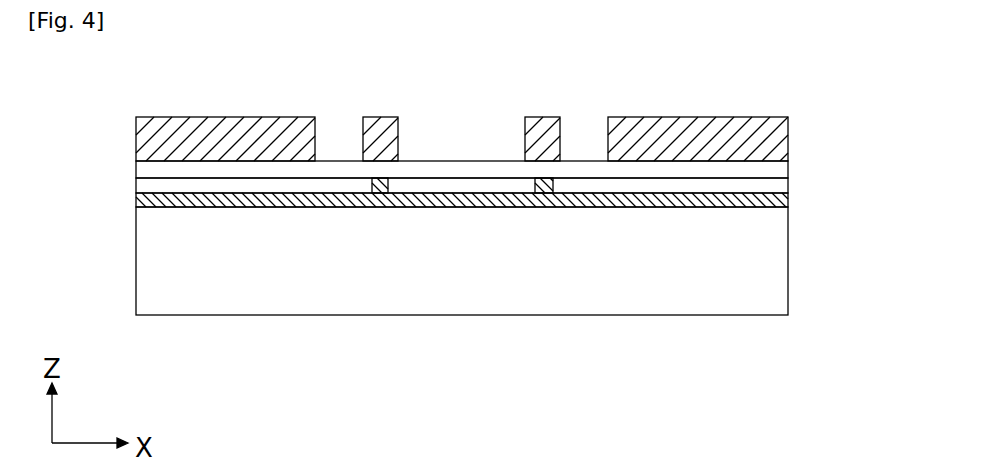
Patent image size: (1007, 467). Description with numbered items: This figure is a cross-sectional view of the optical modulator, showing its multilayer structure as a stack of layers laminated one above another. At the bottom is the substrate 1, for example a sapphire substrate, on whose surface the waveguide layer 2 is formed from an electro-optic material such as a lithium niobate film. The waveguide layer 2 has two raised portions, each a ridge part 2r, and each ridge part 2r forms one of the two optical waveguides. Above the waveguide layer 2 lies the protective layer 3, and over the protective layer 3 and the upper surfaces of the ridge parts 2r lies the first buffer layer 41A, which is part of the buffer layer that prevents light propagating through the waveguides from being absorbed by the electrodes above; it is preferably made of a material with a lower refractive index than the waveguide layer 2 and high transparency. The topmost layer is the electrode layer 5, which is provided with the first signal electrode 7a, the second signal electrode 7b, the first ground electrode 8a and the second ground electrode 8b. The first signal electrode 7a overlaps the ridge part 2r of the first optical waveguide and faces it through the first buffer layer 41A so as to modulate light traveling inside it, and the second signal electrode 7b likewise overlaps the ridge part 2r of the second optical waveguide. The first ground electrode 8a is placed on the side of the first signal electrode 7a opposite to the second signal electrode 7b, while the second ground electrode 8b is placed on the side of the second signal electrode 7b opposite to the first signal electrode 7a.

The substrate 1 is at (716, 300).
The waveguide layer 2 is at (773, 208).
The ridge part 2r is at (370, 192).
The protective layer 3 is at (778, 187).
The first buffer layer 41A is at (778, 166).
The electrode layer 5 is at (492, 106).
The first signal electrode 7a is at (381, 128).
The second signal electrode 7b is at (540, 128).
The first ground electrode 8a is at (240, 130).
The second ground electrode 8b is at (693, 128).